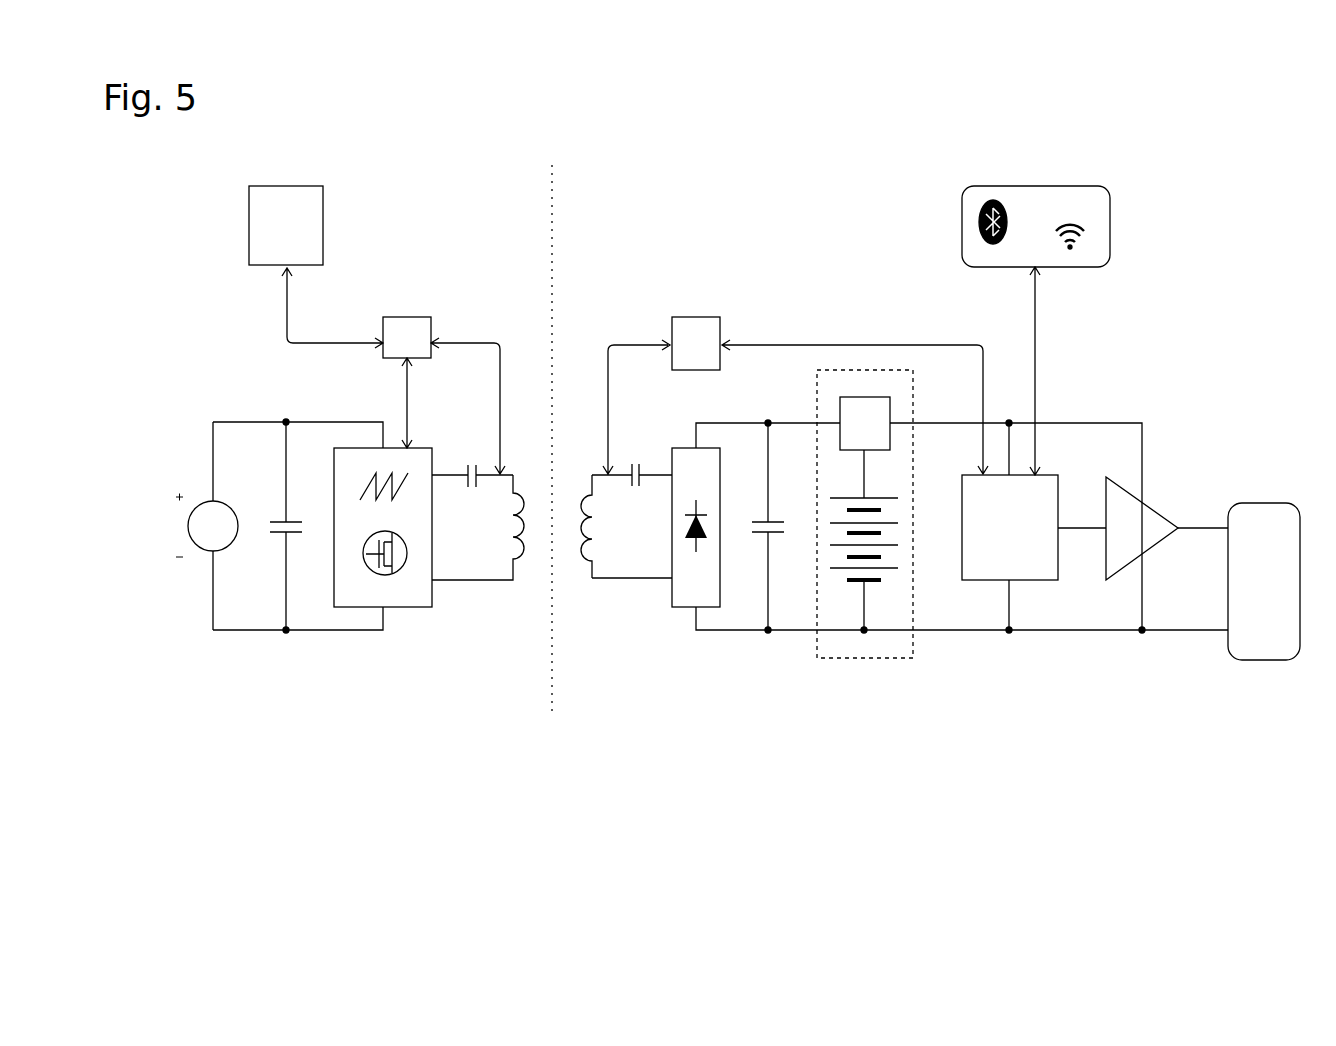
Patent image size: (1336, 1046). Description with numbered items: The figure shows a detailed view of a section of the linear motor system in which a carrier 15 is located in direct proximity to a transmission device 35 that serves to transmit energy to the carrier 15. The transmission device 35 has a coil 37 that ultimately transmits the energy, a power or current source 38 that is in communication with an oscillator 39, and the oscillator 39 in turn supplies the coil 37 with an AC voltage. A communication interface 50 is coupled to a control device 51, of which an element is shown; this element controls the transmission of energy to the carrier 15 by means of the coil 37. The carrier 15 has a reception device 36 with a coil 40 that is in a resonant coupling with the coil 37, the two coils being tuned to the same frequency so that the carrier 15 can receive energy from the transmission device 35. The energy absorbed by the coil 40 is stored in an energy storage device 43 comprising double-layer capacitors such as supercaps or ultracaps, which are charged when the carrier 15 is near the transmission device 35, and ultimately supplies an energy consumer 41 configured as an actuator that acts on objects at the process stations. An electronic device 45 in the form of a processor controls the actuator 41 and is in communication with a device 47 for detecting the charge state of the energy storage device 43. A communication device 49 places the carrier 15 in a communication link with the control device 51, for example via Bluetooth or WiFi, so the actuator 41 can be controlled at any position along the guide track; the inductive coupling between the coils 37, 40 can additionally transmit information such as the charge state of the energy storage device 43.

The carrier 15 is at (1287, 717).
The transmission device 35 is at (537, 160).
The reception device 36 is at (570, 160).
The coil 37 is at (525, 470).
The power or current source 38 is at (196, 481).
The oscillator 39 is at (346, 670).
The coil 40 is at (581, 470).
The energy consumer 41 is at (1248, 601).
The energy storage device 43 is at (902, 593).
The electronic device 45 is at (994, 546).
The device for detecting the charge state 47 is at (849, 442).
The communication device 49 is at (1030, 172).
The communication interface 50 is at (392, 355).
The control device 51 is at (270, 243).